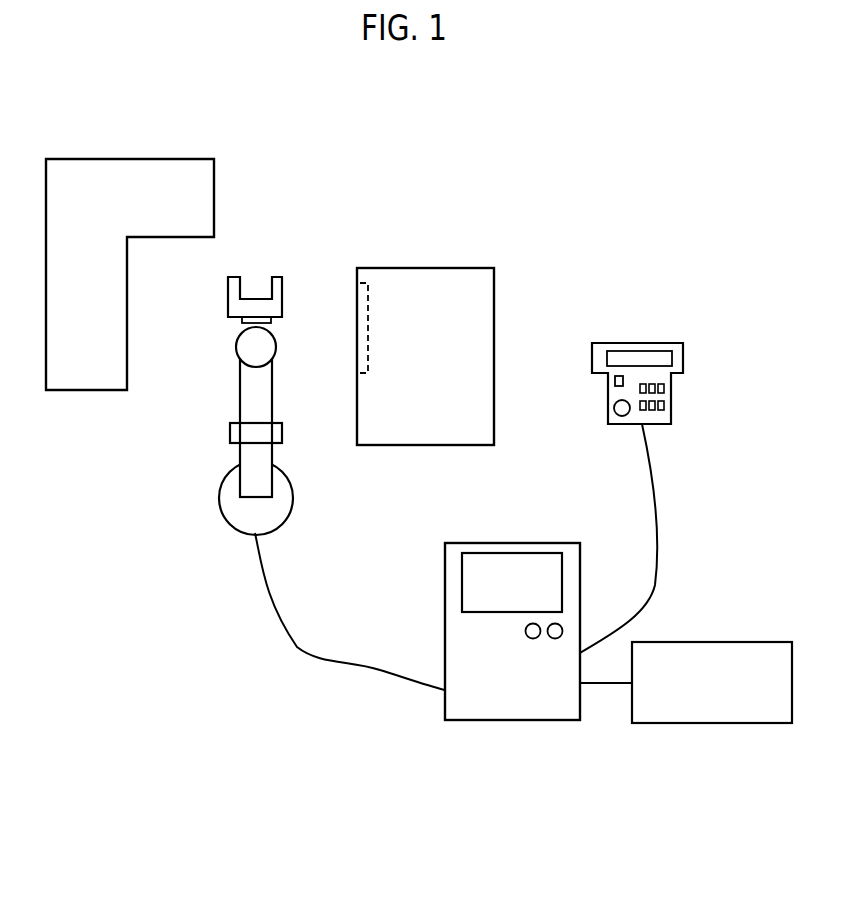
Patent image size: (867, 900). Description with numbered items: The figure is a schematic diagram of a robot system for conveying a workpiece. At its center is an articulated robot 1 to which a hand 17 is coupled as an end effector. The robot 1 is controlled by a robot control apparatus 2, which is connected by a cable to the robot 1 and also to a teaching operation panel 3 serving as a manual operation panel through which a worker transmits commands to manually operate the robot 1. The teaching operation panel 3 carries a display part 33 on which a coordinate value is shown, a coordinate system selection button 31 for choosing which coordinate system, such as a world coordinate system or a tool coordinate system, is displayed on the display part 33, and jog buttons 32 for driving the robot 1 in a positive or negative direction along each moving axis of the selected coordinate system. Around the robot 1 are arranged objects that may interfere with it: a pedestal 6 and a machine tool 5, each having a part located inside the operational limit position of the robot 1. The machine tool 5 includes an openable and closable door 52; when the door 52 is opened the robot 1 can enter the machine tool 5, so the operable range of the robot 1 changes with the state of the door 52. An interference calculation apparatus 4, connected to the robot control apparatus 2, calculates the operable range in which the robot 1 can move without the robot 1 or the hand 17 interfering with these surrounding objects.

The robot 1 is at (241, 365).
The hand 17 is at (275, 283).
The pedestal 6 is at (134, 173).
The machine tool 5 is at (434, 324).
The door 52 is at (368, 300).
The teaching operation panel 3 is at (649, 357).
The display part 33 is at (620, 355).
The coordinate system selection button 31 is at (612, 380).
The jog button 32 is at (665, 389).
The robot control apparatus 2 is at (507, 720).
The interference calculation apparatus 4 is at (745, 642).